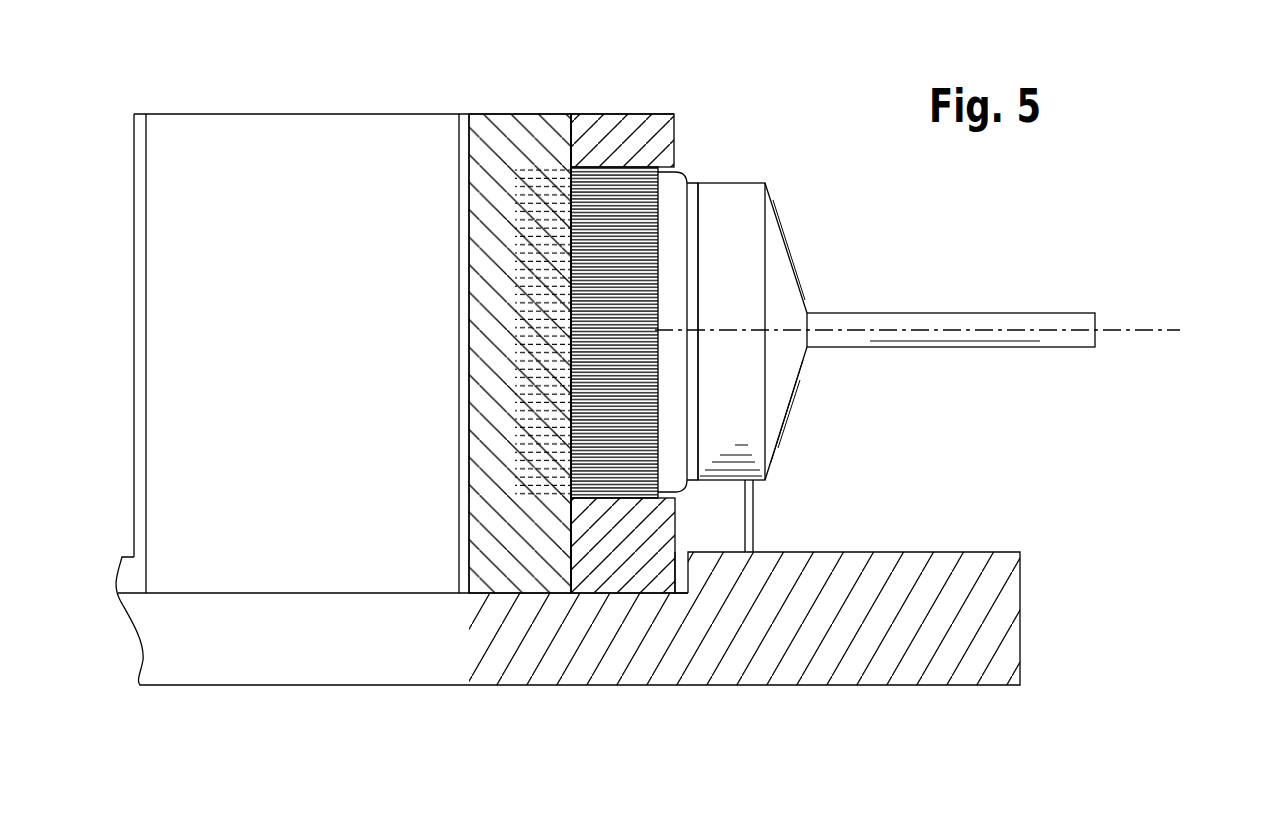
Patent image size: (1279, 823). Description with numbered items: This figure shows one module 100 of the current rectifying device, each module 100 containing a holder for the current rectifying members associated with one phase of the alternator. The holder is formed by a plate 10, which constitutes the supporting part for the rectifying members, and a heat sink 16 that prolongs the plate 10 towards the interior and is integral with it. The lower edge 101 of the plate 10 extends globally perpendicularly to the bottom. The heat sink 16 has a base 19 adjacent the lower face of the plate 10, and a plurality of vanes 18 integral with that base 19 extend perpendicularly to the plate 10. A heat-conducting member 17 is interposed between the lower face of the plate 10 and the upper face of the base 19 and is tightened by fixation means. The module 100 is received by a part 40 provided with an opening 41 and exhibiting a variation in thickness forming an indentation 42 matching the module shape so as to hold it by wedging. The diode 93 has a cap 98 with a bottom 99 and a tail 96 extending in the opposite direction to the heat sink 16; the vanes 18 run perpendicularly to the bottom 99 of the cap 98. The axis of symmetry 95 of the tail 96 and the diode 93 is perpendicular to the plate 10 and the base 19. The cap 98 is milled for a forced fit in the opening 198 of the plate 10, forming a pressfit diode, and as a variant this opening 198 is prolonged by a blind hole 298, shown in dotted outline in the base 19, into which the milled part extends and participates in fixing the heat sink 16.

The plate 10 is at (653, 113).
The heat sink 16 is at (494, 121).
The heat-conducting member 17 is at (571, 113).
The vanes 18 is at (272, 572).
The base 19 is at (490, 558).
The part 40 is at (1022, 598).
The opening 41 is at (352, 645).
The indentation 42 is at (627, 590).
The diode 93 is at (782, 222).
The axis of symmetry 95 is at (1140, 329).
The tail 96 is at (1035, 347).
The cap 98 is at (645, 222).
The bottom 99 is at (576, 382).
The module 100 is at (928, 270).
The lower edge 101 is at (650, 592).
The opening 198 is at (648, 176).
The blind hole 298 is at (490, 176).